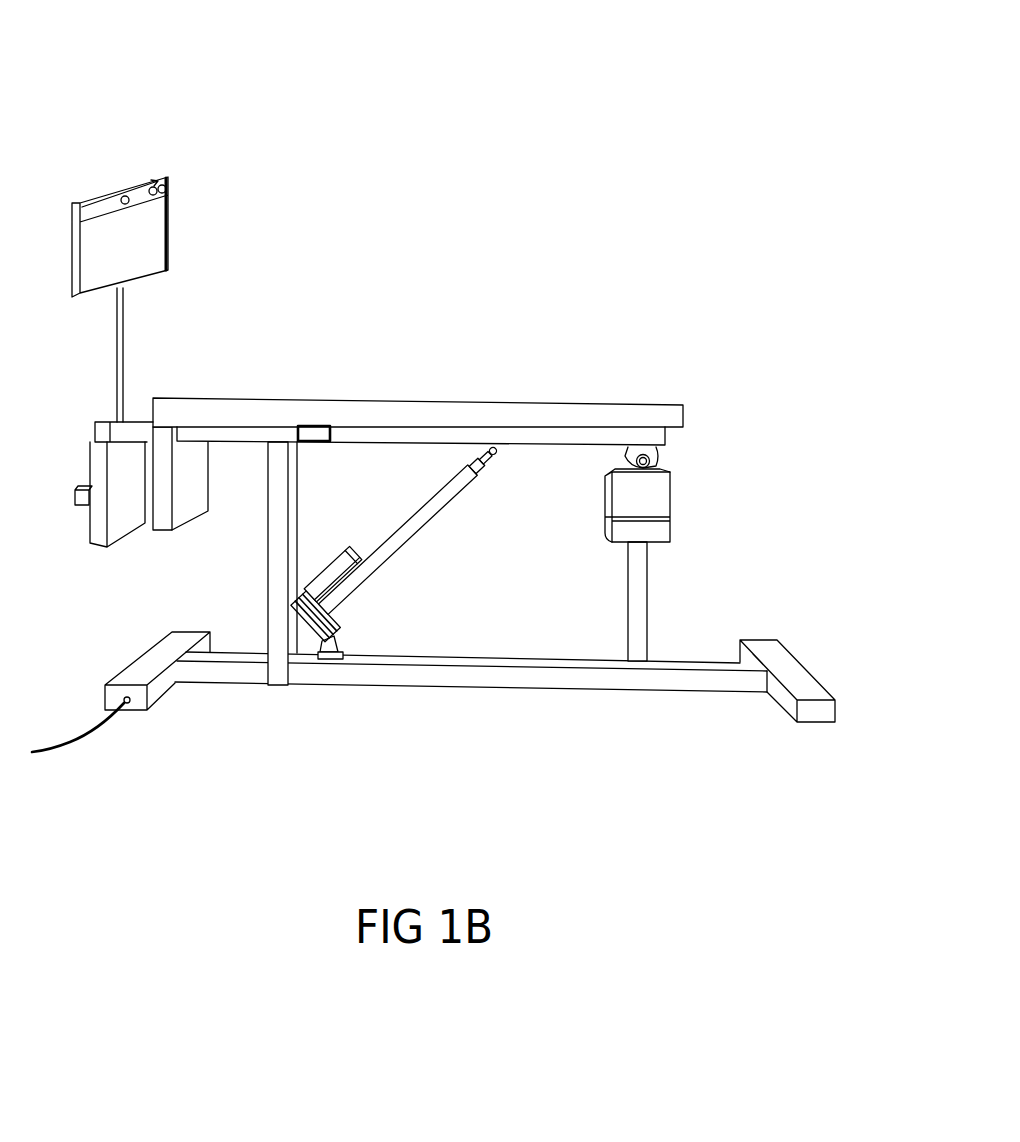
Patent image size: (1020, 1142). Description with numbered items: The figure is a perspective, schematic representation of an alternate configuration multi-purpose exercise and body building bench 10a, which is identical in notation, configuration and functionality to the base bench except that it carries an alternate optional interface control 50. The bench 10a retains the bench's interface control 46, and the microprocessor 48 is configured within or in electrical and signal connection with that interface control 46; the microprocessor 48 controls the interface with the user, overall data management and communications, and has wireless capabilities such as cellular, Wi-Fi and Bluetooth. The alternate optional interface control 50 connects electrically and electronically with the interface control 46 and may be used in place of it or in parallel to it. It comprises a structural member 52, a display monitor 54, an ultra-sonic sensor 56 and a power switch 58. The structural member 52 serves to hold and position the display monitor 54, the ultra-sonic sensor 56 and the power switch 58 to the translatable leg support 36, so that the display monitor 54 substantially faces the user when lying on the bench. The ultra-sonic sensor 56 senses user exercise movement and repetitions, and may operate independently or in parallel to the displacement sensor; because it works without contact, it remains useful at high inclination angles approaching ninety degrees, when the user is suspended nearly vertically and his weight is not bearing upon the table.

The alternate configuration multi-purpose exercise and body building bench 10a is at (715, 70).
The translatable leg support 36 is at (102, 543).
The interface control 46 is at (310, 438).
The microprocessor 48 is at (328, 440).
The alternate optional interface control 50 is at (190, 120).
The structural member 52 is at (125, 368).
The display monitor 54 is at (93, 212).
The ultra-sonic sensor 56 is at (172, 193).
The power switch 58 is at (128, 203).